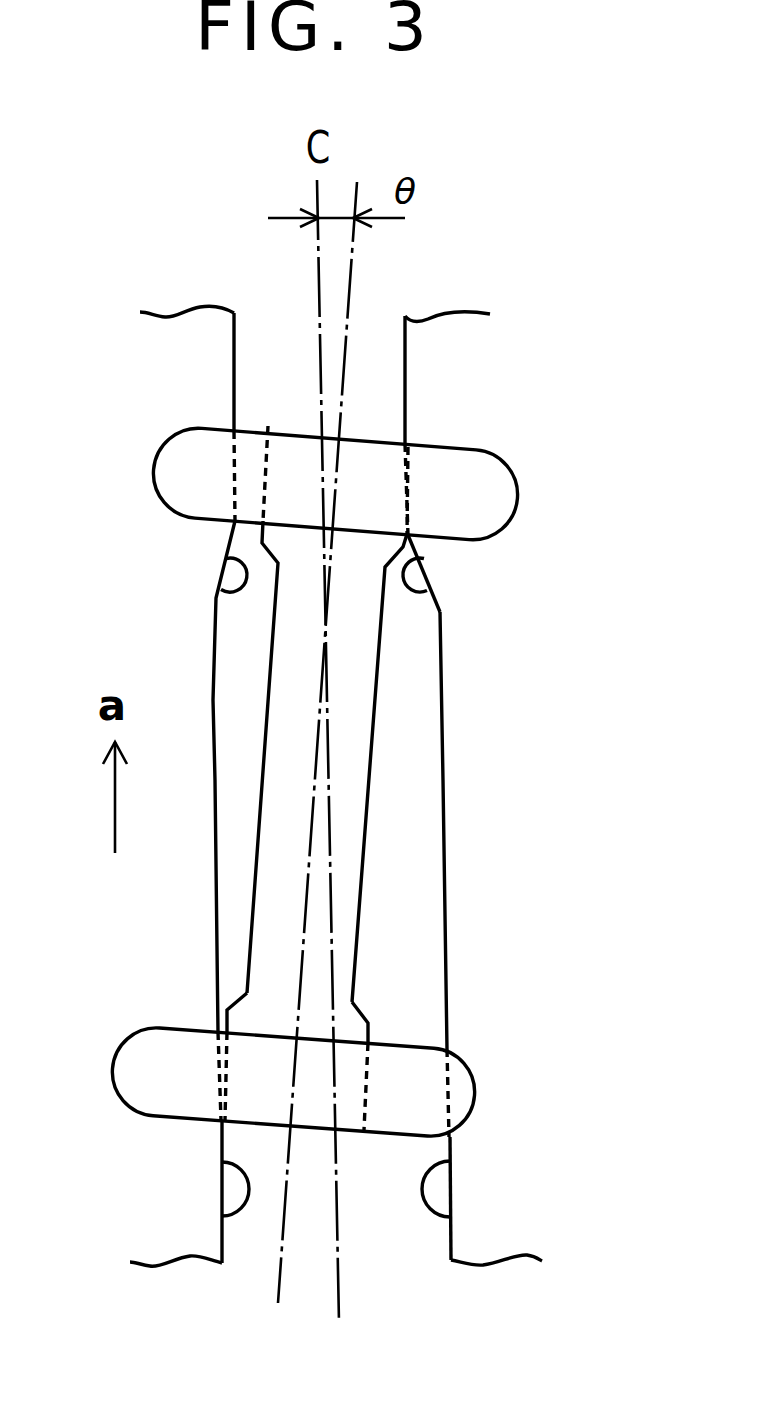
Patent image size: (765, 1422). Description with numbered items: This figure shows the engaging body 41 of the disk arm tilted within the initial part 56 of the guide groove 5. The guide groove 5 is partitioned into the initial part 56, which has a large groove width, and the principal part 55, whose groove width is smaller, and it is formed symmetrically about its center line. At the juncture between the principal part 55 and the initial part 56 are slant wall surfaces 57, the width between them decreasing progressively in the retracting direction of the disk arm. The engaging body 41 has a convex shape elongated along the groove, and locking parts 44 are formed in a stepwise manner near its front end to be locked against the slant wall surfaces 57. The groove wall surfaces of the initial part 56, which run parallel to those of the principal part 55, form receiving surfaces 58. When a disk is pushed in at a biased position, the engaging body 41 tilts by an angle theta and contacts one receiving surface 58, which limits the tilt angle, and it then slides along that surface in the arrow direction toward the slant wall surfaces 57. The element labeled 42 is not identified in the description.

The guide groove 5 is at (377, 318).
The engaging body 41 is at (362, 721).
The flange 42 is at (508, 500).
The locking parts 44 is at (218, 1008).
The principal part 55 is at (387, 370).
The initial part 56 is at (428, 832).
The slant wall surfaces 57 is at (220, 592).
The receiving surfaces 58 is at (227, 1214).